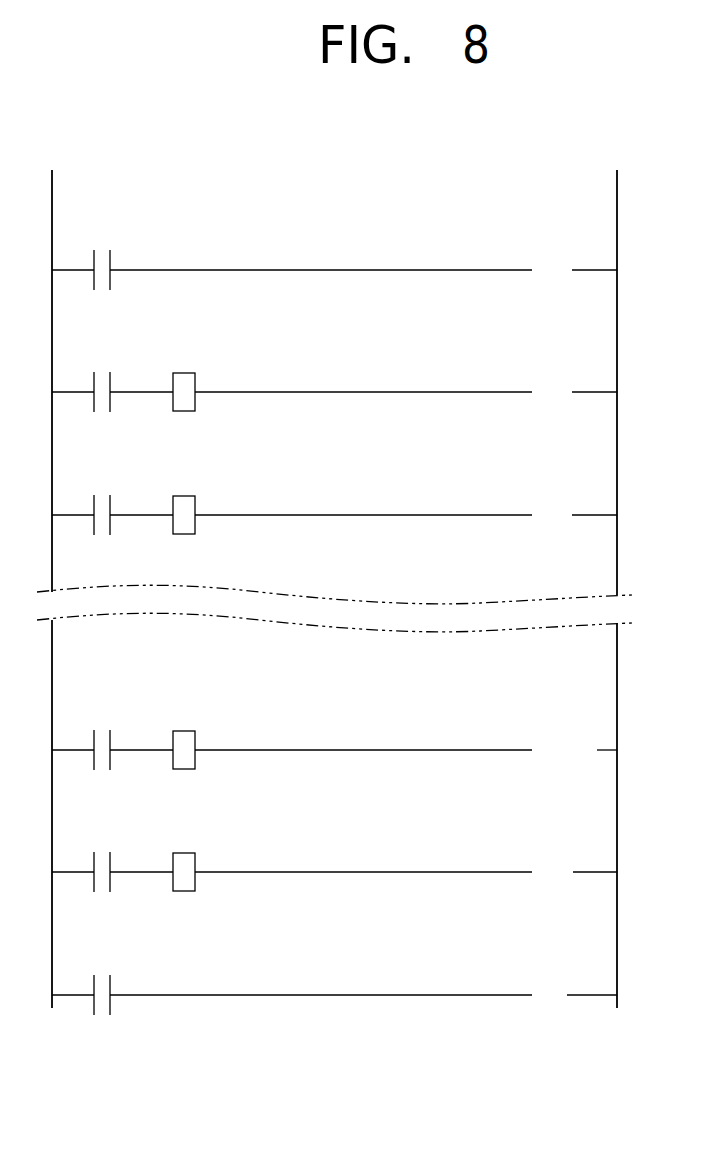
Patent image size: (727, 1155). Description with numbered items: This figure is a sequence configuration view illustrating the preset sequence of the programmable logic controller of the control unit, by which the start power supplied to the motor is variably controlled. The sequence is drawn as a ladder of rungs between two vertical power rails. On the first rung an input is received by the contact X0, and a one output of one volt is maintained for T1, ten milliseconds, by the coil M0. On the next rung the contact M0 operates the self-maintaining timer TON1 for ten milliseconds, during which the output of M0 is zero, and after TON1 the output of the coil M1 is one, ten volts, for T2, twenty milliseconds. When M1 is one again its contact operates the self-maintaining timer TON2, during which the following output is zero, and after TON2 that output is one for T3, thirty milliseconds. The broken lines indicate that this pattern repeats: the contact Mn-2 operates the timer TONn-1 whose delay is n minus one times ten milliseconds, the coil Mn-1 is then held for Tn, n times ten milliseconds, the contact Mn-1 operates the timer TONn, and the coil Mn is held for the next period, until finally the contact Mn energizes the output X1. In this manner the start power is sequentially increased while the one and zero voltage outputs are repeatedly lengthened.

The input X0 is at (292, 255).
The auxiliary relay output M0 is at (112, 377).
The auxiliary relay output M1 is at (112, 500).
The auxiliary relay output Mn-2 is at (112, 736).
The auxiliary relay output Mn-1 is at (112, 857).
The auxiliary relay output Mn is at (292, 981).
The self-maintaining timer TON1 is at (341, 362).
The self-maintaining timer TON2 is at (341, 485).
The self-maintaining timer TONn-1 is at (340, 721).
The self-maintaining timer TONn is at (340, 842).
The first output period T1 is at (574, 241).
The second output period T2 is at (574, 363).
The third output period T3 is at (574, 486).
The n-th output period Tn is at (547, 721).
The output X1 is at (574, 994).